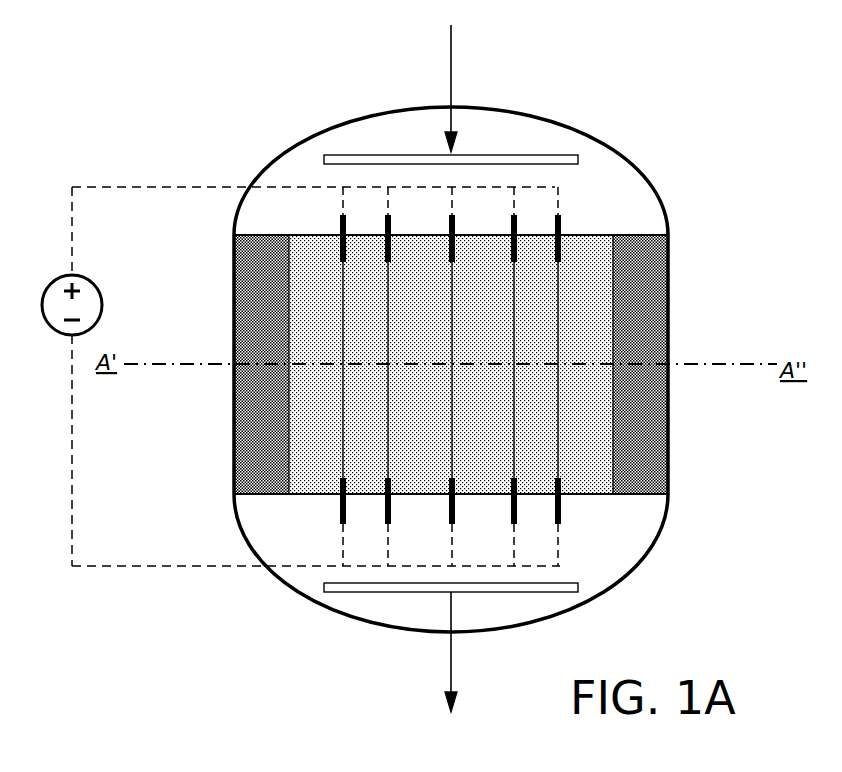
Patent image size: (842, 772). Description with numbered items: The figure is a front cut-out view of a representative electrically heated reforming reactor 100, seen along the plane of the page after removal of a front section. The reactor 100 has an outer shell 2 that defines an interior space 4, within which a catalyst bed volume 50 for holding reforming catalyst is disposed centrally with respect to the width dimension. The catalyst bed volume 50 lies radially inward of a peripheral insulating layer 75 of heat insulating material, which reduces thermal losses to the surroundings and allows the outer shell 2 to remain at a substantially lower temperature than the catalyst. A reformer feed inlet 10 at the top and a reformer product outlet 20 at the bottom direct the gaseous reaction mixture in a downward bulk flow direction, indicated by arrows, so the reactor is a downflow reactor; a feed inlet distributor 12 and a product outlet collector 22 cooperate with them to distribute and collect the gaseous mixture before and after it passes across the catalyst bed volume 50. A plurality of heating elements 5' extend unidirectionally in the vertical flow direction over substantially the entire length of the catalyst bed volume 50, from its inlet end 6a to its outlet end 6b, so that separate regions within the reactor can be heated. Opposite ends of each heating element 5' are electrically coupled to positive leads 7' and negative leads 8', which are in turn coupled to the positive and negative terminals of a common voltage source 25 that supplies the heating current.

The reactor 100 is at (337, 72).
The outer shell 2 is at (607, 146).
The interior space 4 is at (354, 335).
The reformer feed inlet 10 is at (453, 60).
The feed inlet distributor 12 is at (577, 166).
The product outlet collector 22 is at (578, 582).
The reformer product outlet 20 is at (449, 664).
The catalyst bed volume 50 is at (451, 364).
The peripheral insulating layer 75 is at (451, 364).
The heating elements 5' is at (452, 376).
The positive leads 7' is at (315, 224).
The inlet end 6a is at (433, 234).
The outlet end 6b is at (494, 496).
The negative leads 8' is at (587, 514).
The voltage source 25 is at (103, 305).